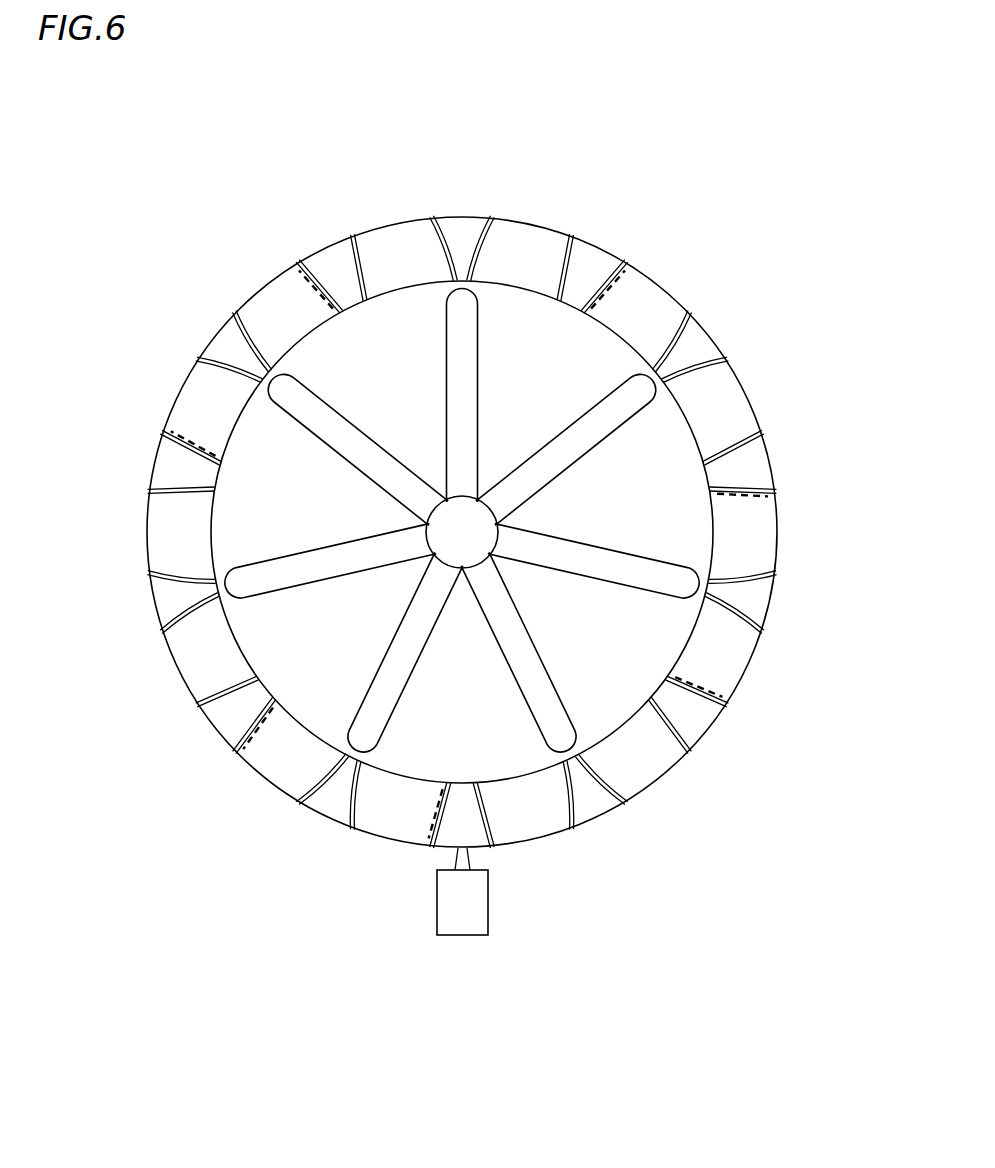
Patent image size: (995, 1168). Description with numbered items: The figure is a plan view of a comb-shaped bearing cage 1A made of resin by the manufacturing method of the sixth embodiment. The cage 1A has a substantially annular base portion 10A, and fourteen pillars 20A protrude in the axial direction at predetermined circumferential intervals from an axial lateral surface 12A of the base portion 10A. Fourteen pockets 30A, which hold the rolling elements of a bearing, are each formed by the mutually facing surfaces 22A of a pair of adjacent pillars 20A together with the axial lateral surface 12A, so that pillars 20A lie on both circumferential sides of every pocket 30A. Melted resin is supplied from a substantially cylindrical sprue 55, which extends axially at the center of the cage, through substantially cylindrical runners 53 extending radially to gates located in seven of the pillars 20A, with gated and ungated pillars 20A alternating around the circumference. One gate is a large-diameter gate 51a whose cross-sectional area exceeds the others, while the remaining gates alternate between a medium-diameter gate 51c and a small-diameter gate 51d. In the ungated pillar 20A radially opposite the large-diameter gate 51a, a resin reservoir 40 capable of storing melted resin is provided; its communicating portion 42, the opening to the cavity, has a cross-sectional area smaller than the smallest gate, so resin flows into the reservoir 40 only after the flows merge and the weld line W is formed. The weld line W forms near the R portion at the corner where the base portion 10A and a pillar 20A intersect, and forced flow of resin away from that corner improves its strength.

The bearing cage 1A is at (705, 130).
The base portion 10A is at (748, 381).
The axial lateral surface 12A is at (700, 417).
The pillar 20A is at (500, 540).
The mutually facing surfaces 22A is at (695, 682).
The pocket 30A is at (462, 532).
The resin reservoir 40 is at (463, 917).
The communicating portion 42 is at (455, 830).
The large-diameter gate 51a is at (462, 248).
The medium-diameter gate 51c is at (663, 373).
The small-diameter gate 51d is at (238, 350).
The runner 53 is at (458, 372).
The sprue 55 is at (460, 533).
The weld line W is at (297, 292).